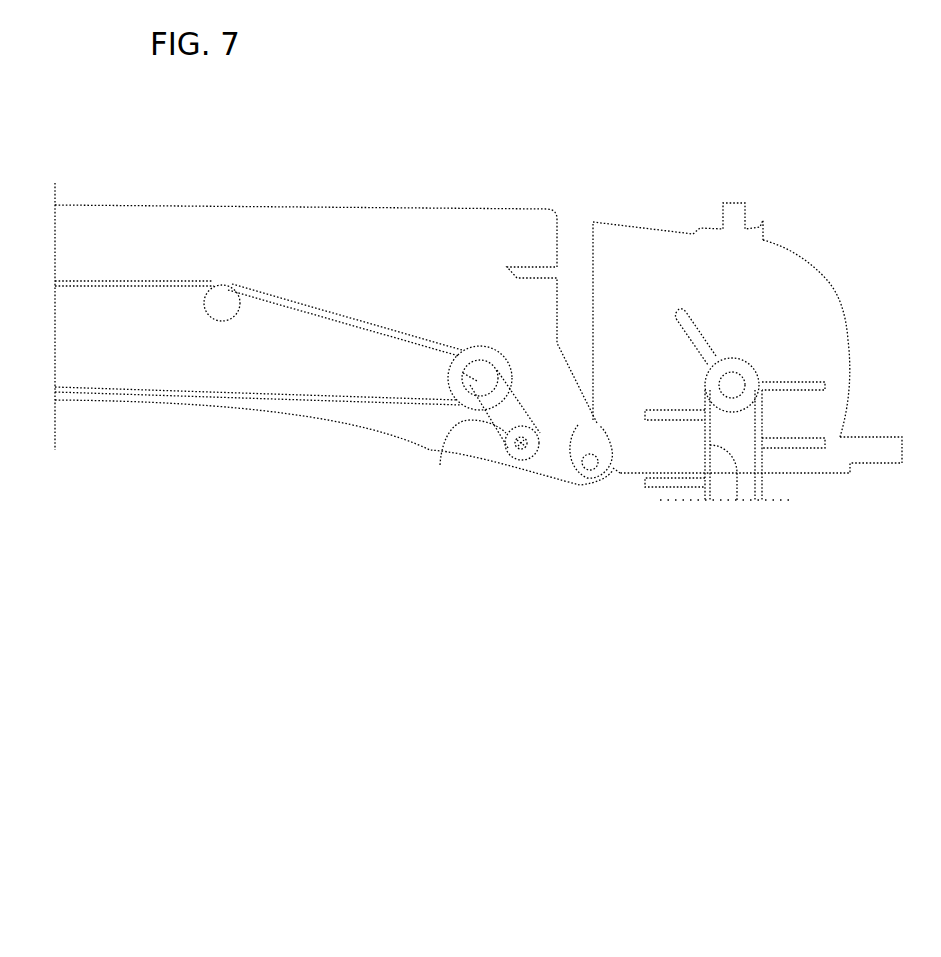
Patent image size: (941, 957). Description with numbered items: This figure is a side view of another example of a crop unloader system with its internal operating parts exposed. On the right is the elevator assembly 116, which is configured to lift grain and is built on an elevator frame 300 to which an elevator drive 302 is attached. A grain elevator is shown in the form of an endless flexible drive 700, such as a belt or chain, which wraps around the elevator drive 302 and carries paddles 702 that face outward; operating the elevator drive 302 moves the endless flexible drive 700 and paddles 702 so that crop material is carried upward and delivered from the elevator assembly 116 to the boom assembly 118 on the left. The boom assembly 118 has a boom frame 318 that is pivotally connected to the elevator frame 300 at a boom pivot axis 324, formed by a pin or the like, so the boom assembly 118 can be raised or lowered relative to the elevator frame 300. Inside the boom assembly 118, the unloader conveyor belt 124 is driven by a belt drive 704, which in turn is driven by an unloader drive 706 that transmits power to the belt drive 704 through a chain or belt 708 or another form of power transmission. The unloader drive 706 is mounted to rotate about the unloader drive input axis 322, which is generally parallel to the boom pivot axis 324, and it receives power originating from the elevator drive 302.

The elevator assembly 116 is at (756, 319).
The boom assembly 118 is at (284, 186).
The unloader conveyor belt 124 is at (110, 282).
The elevator frame 300 is at (830, 282).
The elevator drive 302 is at (748, 375).
The boom frame 318 is at (427, 451).
The unloader drive input axis 322 is at (516, 443).
The boom pivot axis 324 is at (590, 484).
The endless flexible drive 700 is at (735, 487).
The paddles 702 is at (797, 450).
The belt drive 704 is at (453, 388).
The unloader drive 706 is at (497, 441).
The chain or belt 708 is at (443, 446).